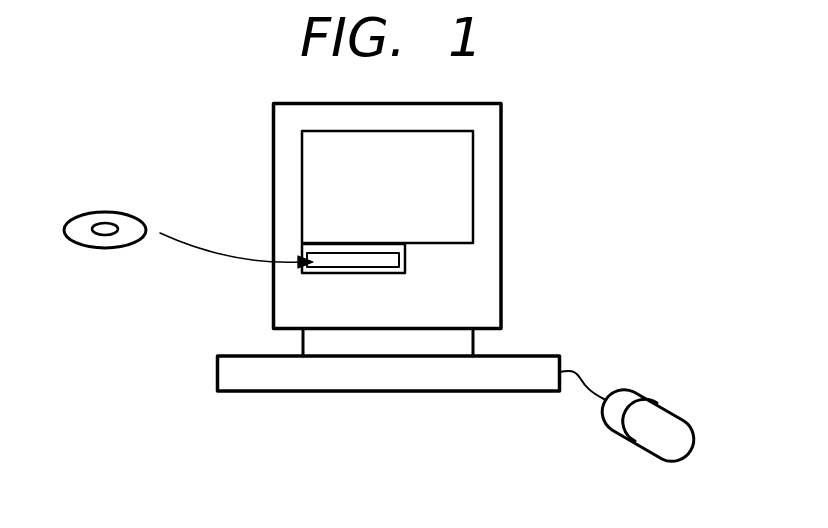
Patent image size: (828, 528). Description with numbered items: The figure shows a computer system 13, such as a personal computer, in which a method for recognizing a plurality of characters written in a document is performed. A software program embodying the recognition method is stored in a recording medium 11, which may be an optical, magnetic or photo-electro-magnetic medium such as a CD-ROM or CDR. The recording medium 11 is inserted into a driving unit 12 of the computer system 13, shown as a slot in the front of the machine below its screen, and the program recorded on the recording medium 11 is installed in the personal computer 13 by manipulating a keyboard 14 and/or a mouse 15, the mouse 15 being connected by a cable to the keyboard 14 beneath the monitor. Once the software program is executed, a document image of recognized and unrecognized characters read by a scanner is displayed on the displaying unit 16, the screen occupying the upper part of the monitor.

The recording medium 11 is at (107, 212).
The driving unit 12 is at (367, 273).
The computer system 13 is at (542, 132).
The keyboard 14 is at (530, 356).
The mouse 15 is at (660, 398).
The displaying unit 16 is at (473, 178).